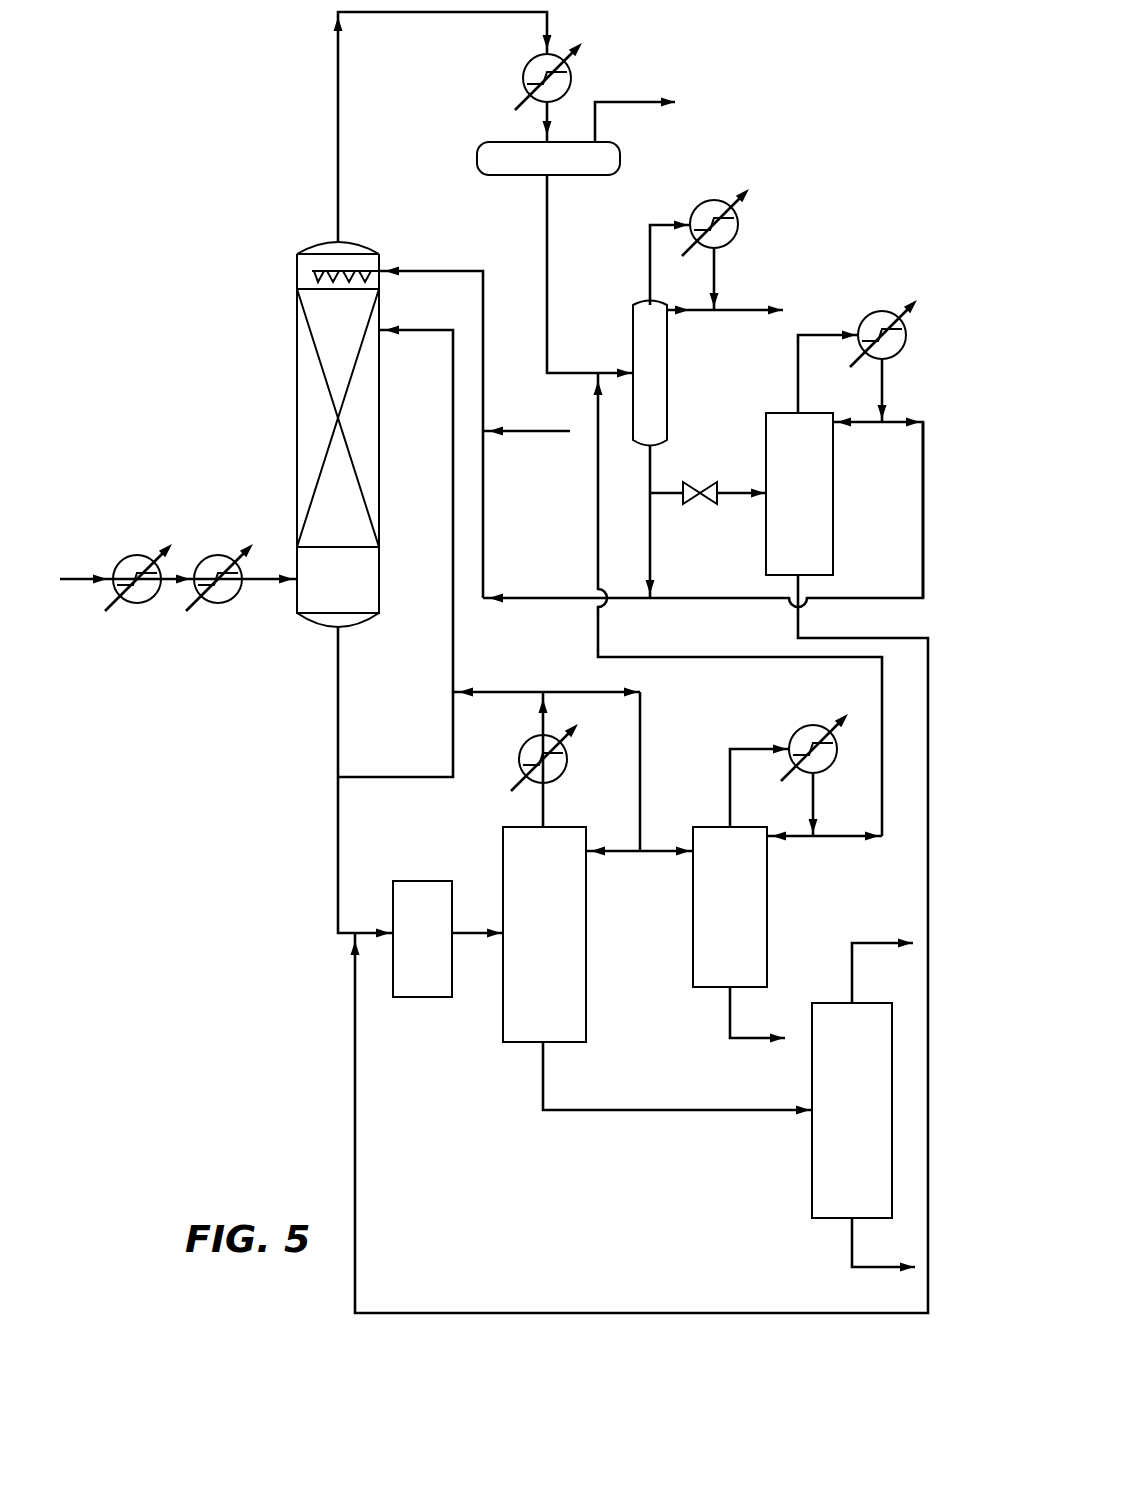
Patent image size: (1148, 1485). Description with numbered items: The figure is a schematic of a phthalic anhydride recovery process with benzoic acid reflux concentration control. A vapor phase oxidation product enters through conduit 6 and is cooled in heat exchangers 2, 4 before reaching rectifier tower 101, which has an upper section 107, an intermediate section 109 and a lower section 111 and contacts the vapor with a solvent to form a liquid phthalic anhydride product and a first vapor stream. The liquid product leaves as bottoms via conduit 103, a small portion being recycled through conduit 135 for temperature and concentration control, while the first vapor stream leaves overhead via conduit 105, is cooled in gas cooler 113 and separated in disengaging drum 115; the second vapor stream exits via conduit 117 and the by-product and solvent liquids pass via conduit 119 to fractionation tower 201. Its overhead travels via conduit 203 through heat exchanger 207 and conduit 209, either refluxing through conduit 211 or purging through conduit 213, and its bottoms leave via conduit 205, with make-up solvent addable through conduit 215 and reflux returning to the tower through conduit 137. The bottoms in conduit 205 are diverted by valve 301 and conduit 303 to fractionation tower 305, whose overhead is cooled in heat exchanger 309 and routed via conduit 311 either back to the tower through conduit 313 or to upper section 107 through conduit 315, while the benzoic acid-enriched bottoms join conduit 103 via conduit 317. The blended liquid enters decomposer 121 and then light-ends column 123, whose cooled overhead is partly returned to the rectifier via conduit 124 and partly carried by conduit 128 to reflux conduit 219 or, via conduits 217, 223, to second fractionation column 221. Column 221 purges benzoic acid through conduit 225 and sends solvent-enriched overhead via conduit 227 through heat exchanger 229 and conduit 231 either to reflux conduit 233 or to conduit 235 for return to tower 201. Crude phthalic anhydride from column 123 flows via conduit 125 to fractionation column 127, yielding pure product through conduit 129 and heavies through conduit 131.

The heat exchanger 2 is at (130, 555).
The heat exchanger 4 is at (213, 555).
The conduit 6 is at (72, 579).
The rectifier tower 101 is at (297, 368).
The conduit 103 is at (338, 657).
The conduit 105 is at (337, 153).
The upper section 107 is at (291, 258).
The intermediate section 109 is at (342, 310).
The lower section 111 is at (393, 547).
The low pressure drop gas cooler 113 is at (532, 58).
The vapor/liquid disengaging drum 115 is at (500, 142).
The conduit 117 is at (615, 102).
The conduit 119 is at (547, 211).
The decomposer 121 is at (422, 881).
The light-ends fractionation column 123 is at (568, 827).
The conduit 124 is at (520, 692).
The conduit 125 is at (543, 1083).
The fractionation column 127 is at (836, 1003).
The conduit 128 is at (572, 692).
The conduit 129 is at (885, 943).
The conduit 131 is at (880, 1268).
The conduit 135 is at (453, 396).
The reflux line 137 is at (385, 276).
The fractionation tower 201 is at (633, 323).
The conduit 203 is at (649, 267).
The conduit 205 is at (628, 598).
The heat exchanger 207 is at (713, 200).
The conduit 209 is at (716, 283).
The conduit 211 is at (700, 312).
The conduit 213 is at (765, 312).
The conduit 215 is at (520, 431).
The conduit 217 is at (640, 730).
The conduit 219 is at (612, 853).
The second fractionation column 221 is at (693, 958).
The conduit 223 is at (655, 853).
The conduit 225 is at (750, 1040).
The conduit 227 is at (730, 795).
The heat exchanger 229 is at (810, 725).
The conduit 231 is at (816, 807).
The conduit 233 is at (796, 838).
The conduit 235 is at (851, 838).
The valve 301 is at (700, 482).
The conduit 303 is at (738, 496).
The fractionation tower 305 is at (766, 432).
The heat exchanger 309 is at (878, 311).
The conduit 311 is at (885, 394).
The conduit 313 is at (858, 424).
The conduit 315 is at (923, 522).
The conduit 317 is at (850, 638).